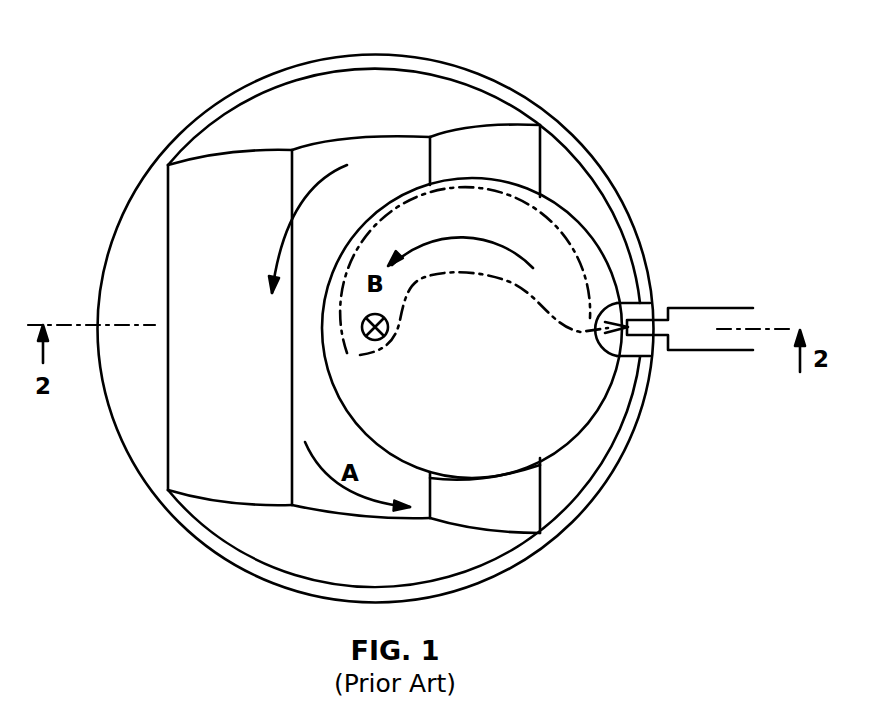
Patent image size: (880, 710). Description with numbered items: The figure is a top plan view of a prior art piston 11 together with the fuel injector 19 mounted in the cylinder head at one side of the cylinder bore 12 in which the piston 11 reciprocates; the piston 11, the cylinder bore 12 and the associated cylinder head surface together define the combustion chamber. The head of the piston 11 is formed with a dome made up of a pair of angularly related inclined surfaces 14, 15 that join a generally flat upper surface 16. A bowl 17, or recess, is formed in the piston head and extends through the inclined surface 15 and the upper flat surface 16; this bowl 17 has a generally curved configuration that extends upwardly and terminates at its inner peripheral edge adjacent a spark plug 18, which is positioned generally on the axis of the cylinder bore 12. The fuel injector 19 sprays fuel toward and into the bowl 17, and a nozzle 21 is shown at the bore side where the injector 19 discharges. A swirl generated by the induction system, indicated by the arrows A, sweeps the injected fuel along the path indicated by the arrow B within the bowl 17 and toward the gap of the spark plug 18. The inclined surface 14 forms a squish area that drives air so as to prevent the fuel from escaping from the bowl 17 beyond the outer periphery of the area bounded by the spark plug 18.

The piston 11 is at (293, 547).
The cylinder bore 12 is at (597, 163).
The inclined surface 14 is at (202, 482).
The inclined surface 15 is at (478, 167).
The upper flat surface 16 is at (368, 157).
The bowl 17 is at (537, 390).
The spark plug 18 is at (362, 332).
The fuel injector 19 is at (690, 315).
The nozzle 21 is at (650, 340).